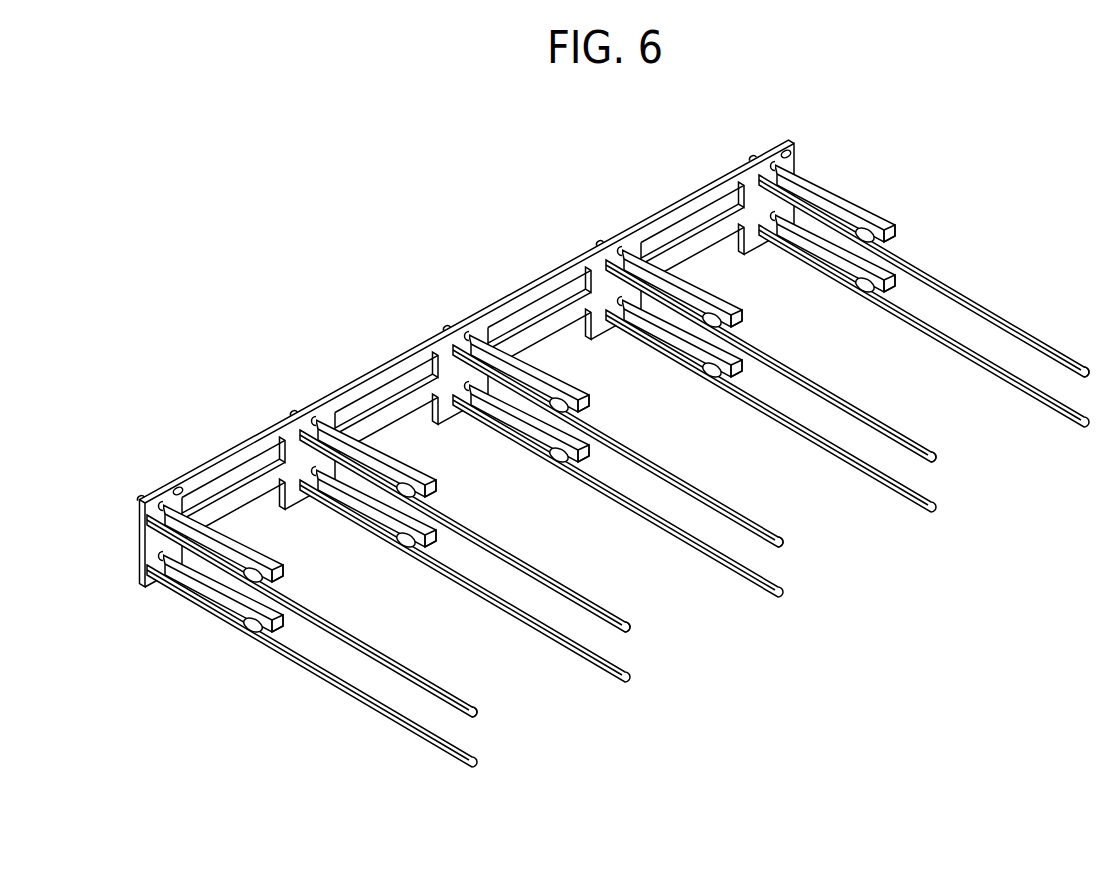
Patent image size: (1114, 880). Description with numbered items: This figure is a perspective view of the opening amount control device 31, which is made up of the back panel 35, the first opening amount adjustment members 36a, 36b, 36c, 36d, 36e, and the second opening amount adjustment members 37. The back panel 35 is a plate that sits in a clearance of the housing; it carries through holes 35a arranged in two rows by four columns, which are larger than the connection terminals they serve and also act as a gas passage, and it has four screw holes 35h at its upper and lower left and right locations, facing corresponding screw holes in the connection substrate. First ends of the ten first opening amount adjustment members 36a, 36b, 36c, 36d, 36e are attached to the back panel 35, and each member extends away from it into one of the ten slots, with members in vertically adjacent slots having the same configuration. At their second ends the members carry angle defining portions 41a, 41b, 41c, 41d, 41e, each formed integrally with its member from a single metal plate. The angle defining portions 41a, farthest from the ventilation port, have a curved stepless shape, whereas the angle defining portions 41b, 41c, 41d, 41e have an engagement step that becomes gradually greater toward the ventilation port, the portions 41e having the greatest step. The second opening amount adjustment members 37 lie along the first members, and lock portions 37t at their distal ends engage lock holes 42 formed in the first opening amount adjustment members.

The opening amount control device 31 is at (578, 182).
The back panel 35 is at (724, 190).
The through hole 35a is at (388, 385).
The screw hole 35h is at (174, 488).
The first opening amount adjustment member 36a is at (312, 653).
The first opening amount adjustment member 36b is at (465, 568).
The first opening amount adjustment member 36c is at (618, 483).
The first opening amount adjustment member 36d is at (771, 398).
The first opening amount adjustment member 36e is at (924, 313).
The angle defining portion 41a is at (448, 768).
The angle defining portion 41b is at (601, 683).
The angle defining portion 41c is at (754, 598).
The angle defining portion 41d is at (907, 513).
The angle defining portion 41e is at (1060, 428).
The second opening amount adjustment member 37 is at (527, 411).
The lock portion 37t is at (576, 483).
The lock hole 42 is at (543, 461).